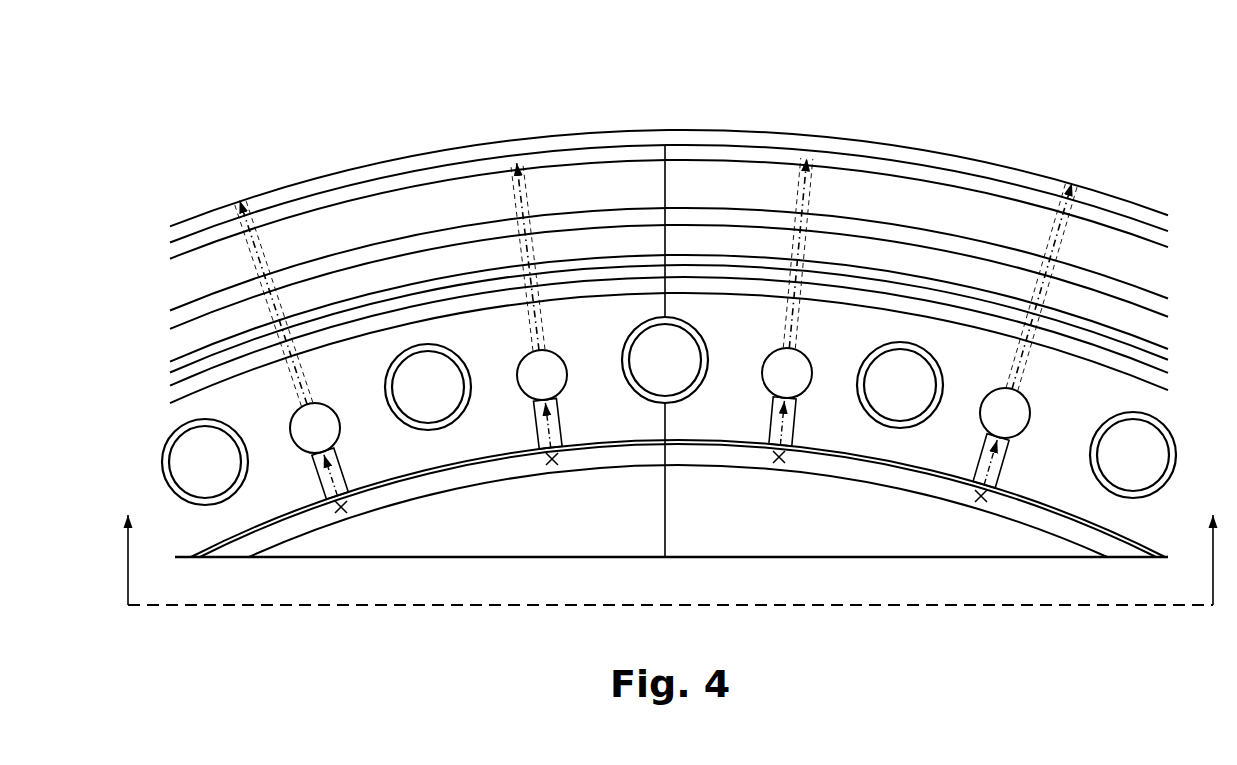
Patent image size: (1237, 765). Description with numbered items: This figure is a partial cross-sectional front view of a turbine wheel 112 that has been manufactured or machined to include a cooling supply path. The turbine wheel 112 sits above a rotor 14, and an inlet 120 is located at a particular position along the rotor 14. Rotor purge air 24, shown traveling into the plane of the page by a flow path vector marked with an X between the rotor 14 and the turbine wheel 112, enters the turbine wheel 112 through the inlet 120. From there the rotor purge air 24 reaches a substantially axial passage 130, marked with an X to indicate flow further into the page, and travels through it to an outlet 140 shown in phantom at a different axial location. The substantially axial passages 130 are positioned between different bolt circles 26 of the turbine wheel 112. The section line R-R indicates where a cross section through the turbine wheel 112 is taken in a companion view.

The turbine wheel 112 is at (542, 116).
The rotor 14 is at (671, 498).
The bolt circles 26 is at (669, 411).
The substantially axial passage 130 is at (322, 403).
The inlet 120 is at (345, 472).
The rotor purge air 24 is at (347, 510).
The outlet 140 is at (262, 248).
The section line R- R is at (670, 544).